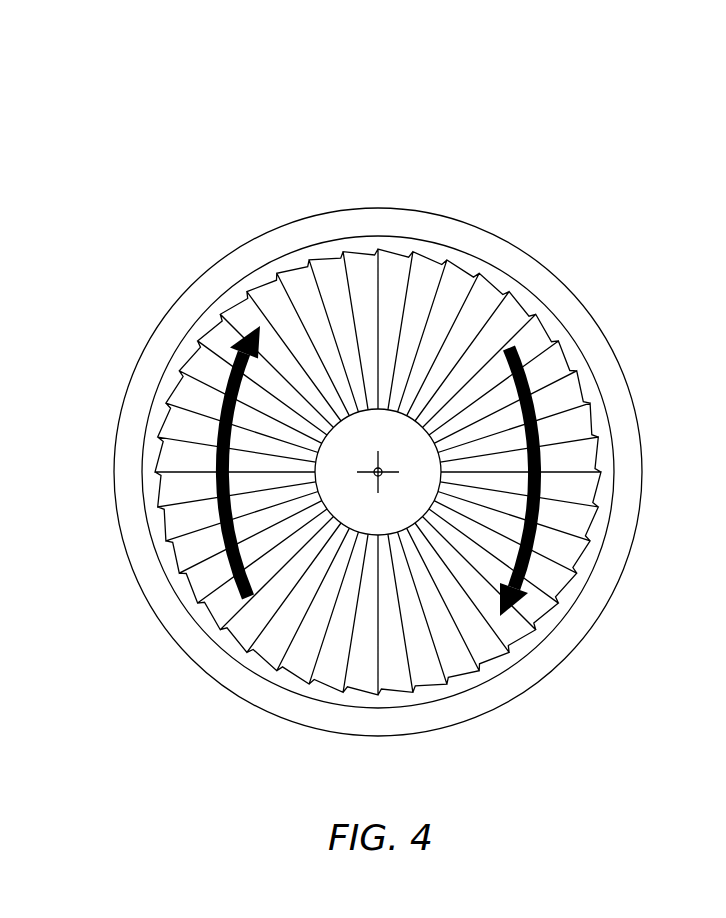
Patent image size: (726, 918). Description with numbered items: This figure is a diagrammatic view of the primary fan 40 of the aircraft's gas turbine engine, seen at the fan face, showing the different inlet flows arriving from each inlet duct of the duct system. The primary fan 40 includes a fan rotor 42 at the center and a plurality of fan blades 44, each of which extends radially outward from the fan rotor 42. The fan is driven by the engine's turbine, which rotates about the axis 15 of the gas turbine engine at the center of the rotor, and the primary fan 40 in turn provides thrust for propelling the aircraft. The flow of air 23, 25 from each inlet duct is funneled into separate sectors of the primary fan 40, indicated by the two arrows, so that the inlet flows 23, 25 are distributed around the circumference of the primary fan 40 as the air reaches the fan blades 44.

The primary fan 40 is at (148, 158).
The fan blades 44 is at (441, 238).
The fan rotor 42 is at (412, 388).
The axis 15 is at (378, 472).
The flow of air 23 is at (220, 440).
The flow of air 25 is at (545, 437).